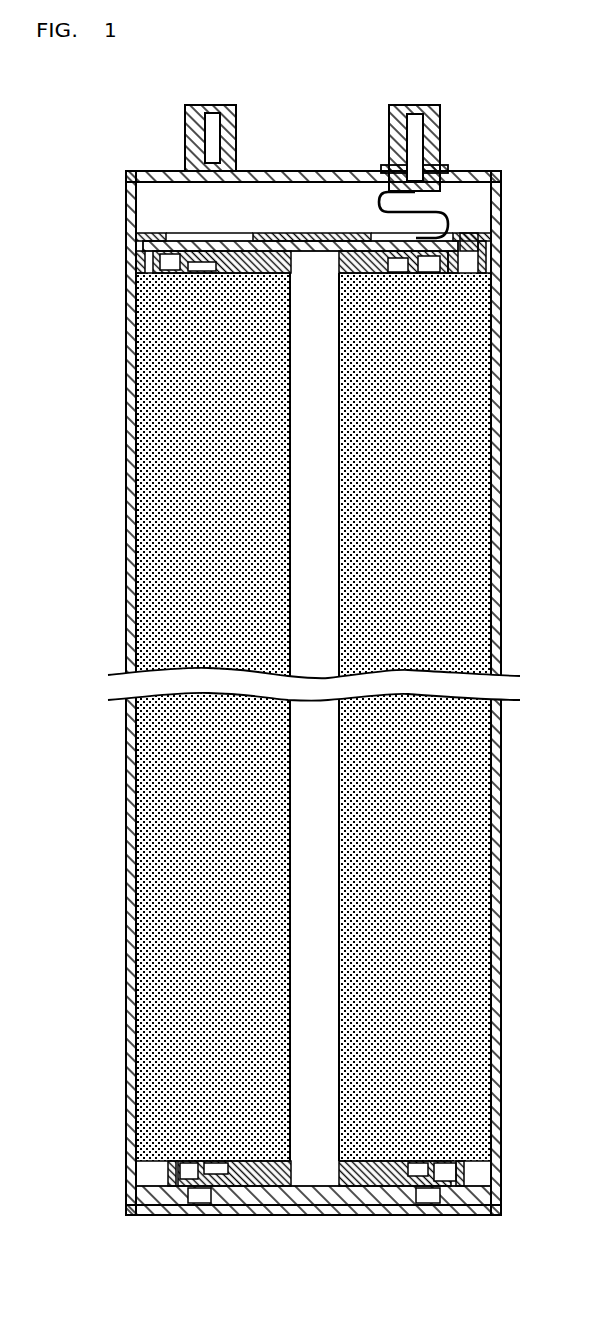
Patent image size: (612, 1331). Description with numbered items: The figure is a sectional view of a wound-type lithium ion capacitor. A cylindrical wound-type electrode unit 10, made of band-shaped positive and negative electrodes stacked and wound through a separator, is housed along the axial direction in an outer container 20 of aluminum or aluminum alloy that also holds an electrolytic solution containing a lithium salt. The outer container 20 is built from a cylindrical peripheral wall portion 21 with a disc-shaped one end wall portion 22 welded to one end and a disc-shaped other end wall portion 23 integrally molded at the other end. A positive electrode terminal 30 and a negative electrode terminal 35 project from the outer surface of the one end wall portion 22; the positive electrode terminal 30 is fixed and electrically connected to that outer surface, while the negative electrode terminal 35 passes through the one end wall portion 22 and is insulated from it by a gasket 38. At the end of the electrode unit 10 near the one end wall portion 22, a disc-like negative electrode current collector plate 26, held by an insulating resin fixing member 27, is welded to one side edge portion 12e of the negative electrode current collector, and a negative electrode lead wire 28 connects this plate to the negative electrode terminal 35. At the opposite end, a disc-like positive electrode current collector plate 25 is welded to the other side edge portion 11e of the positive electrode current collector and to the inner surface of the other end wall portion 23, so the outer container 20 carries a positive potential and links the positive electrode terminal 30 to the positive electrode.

The wound-type electrode unit 10 is at (140, 402).
The outer container 20 is at (118, 522).
The peripheral wall portion 21 is at (496, 385).
The one end wall portion 22 is at (344, 163).
The other end wall portion 23 is at (284, 1200).
The positive electrode current collector plate 25 is at (372, 1194).
The negative electrode current collector plate 26 is at (222, 233).
The fixing member 27 is at (491, 249).
The negative electrode lead wire 28 is at (440, 212).
The positive electrode terminal 30 is at (177, 114).
The negative electrode terminal 35 is at (433, 112).
The gasket 38 is at (442, 162).
The one side edge portion of the negative electrode current collector 12e is at (128, 252).
The other side edge portion of the positive electrode current collector 11e is at (160, 1163).